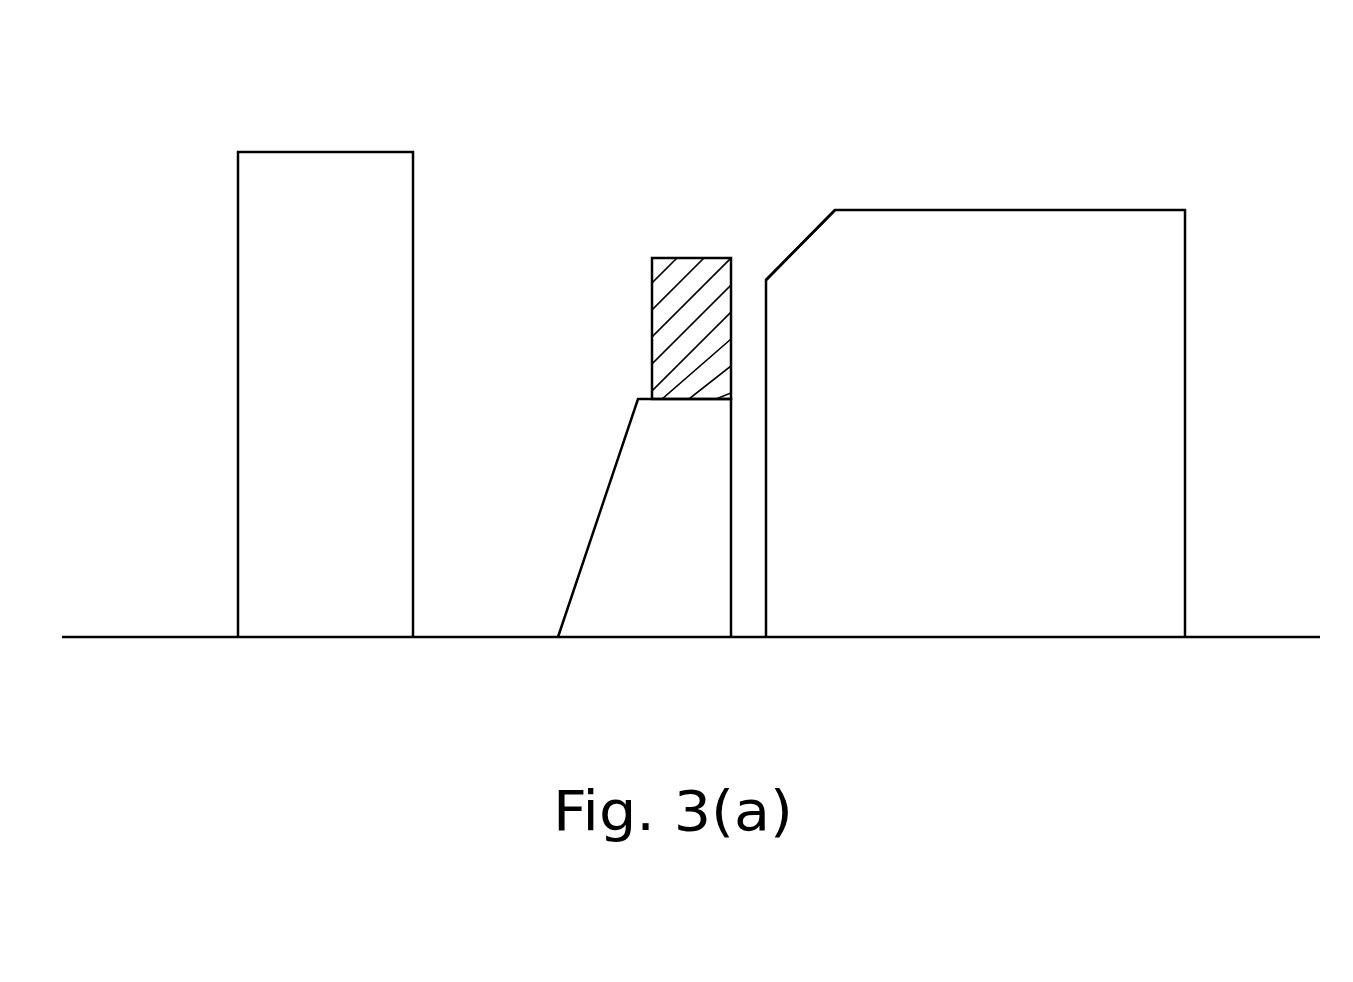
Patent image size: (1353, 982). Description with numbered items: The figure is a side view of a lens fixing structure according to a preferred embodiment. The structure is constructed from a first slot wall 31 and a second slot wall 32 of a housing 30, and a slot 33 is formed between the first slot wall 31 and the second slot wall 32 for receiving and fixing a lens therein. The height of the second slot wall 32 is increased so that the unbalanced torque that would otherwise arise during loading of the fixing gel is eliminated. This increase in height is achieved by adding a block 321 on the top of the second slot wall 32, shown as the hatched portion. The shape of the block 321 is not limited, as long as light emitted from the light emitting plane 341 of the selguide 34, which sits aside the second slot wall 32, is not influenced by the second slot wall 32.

The housing 30 is at (497, 668).
The first slot wall 31 is at (300, 453).
The second slot wall 32 is at (667, 527).
The block 321 is at (675, 330).
The slot 33 is at (462, 460).
The selguide 34 is at (1120, 419).
The light emitting plane 341 is at (815, 225).